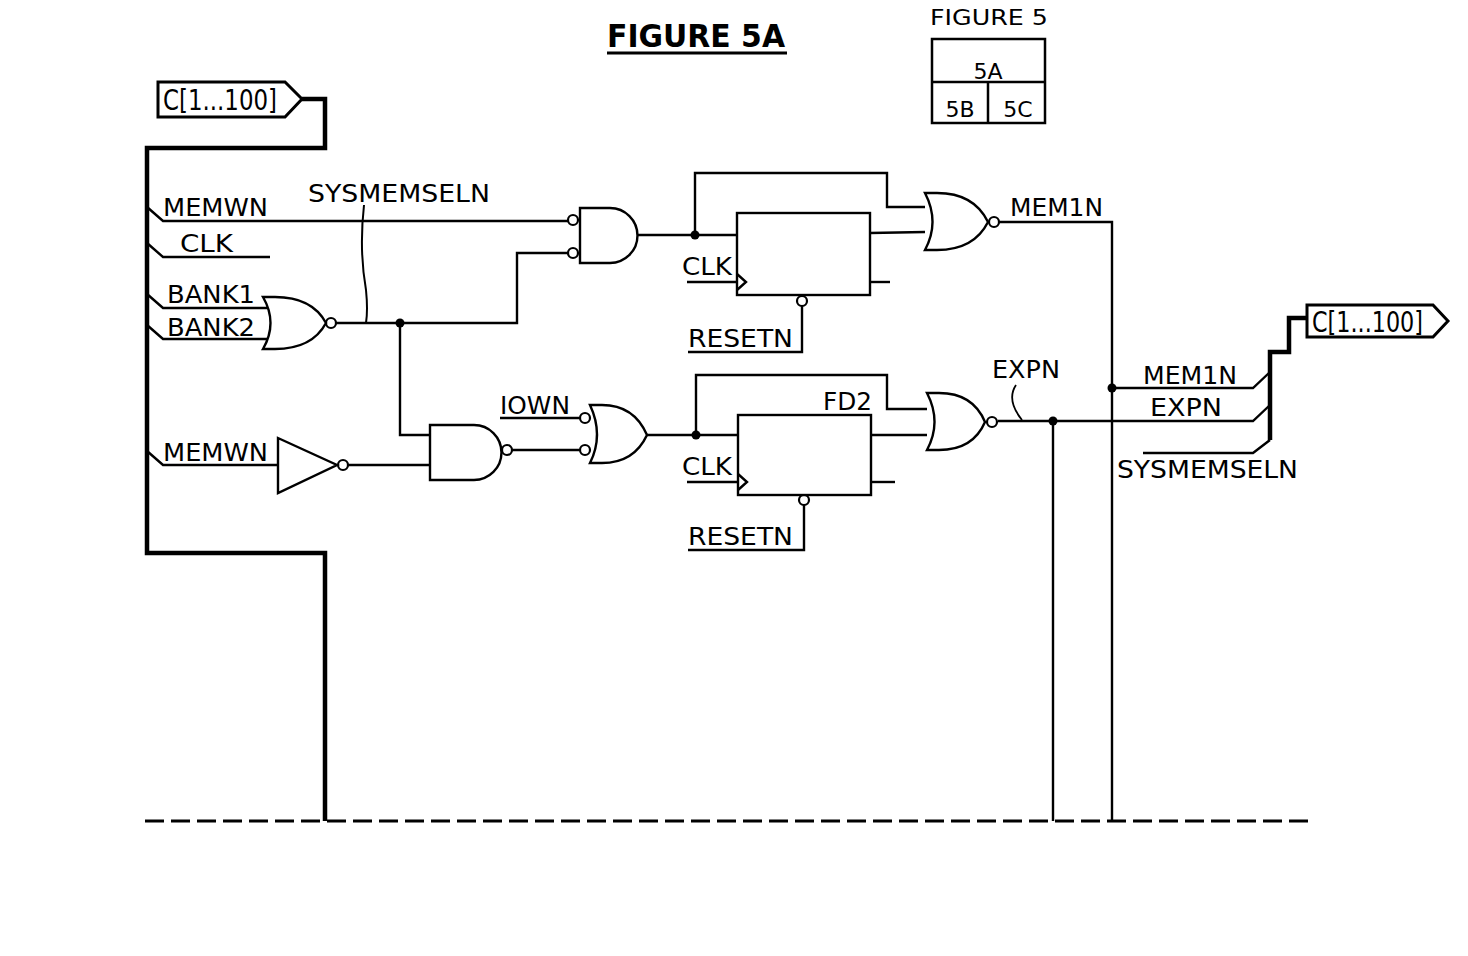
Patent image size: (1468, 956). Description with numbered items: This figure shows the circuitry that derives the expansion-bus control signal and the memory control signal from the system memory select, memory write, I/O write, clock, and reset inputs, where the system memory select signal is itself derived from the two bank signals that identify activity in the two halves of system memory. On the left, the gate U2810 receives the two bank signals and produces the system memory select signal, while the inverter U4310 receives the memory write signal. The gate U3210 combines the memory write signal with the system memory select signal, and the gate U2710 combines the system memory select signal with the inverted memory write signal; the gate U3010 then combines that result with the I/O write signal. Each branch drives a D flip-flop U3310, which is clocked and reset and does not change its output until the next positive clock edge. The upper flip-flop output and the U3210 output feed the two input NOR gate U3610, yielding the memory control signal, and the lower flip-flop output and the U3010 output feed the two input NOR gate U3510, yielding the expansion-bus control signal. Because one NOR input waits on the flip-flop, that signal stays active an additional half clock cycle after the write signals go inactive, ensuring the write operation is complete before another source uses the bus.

The NOR gate U2810 is at (290, 312).
The AND gate with inverted inputs U3210 is at (620, 201).
The D flip-flop FD2 U3310 is at (800, 345).
The NOR gate U3610 is at (953, 206).
The inverter U4310 is at (287, 456).
The NAND gate U2710 is at (455, 432).
The OR gate with inverted inputs U3010 is at (629, 412).
The two input NOR gate U3510 is at (953, 408).